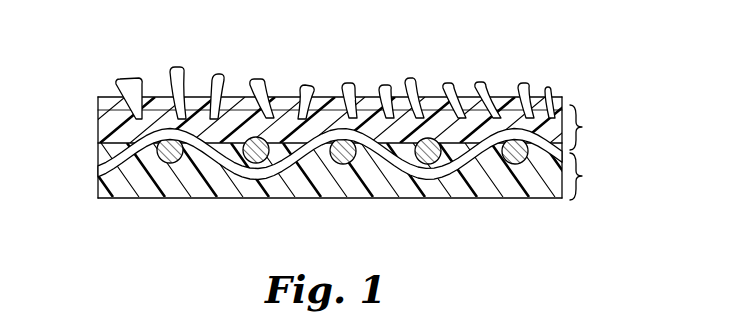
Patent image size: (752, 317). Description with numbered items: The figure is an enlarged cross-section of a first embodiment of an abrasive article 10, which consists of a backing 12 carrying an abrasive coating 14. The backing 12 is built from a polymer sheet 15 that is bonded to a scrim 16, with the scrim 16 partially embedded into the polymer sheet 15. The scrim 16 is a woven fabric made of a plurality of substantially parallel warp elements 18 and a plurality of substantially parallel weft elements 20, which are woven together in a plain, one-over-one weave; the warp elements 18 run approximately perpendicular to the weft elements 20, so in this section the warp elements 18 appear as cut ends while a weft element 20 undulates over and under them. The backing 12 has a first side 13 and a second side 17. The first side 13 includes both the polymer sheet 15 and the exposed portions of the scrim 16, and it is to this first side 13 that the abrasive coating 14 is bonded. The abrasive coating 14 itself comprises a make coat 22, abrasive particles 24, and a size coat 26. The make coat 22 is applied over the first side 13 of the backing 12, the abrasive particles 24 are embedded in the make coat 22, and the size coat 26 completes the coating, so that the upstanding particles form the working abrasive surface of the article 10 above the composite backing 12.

The abrasive article 10 is at (568, 47).
The backing 12 is at (318, 171).
The first side 13 is at (104, 141).
The abrasive coating 14 is at (352, 123).
The polymer sheet 15 is at (125, 190).
The scrim 16 is at (96, 168).
The second side 17 is at (347, 200).
The warp elements 18 is at (330, 189).
The weft elements 20 is at (275, 168).
The make coat 22 is at (538, 107).
The abrasive particles 24 is at (405, 80).
The size coat 26 is at (232, 103).